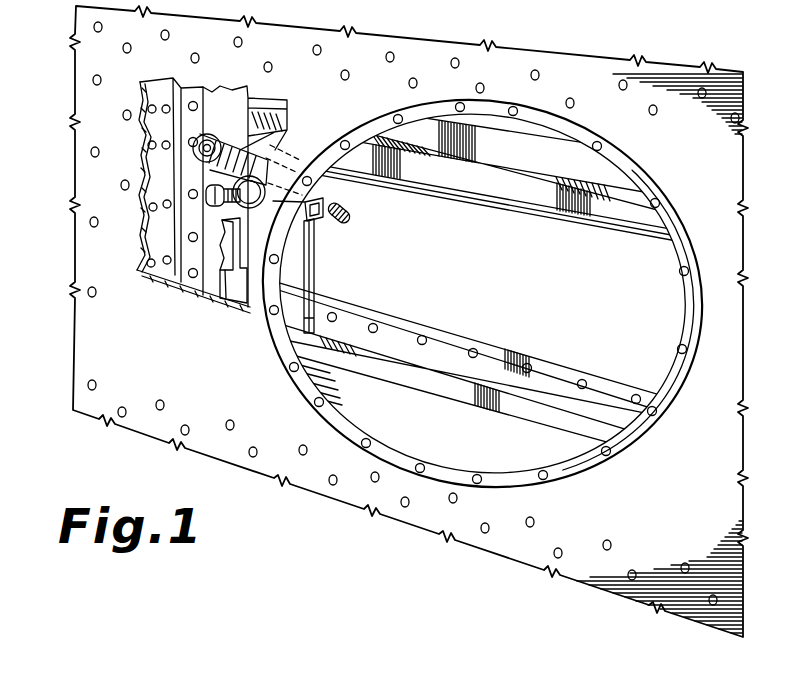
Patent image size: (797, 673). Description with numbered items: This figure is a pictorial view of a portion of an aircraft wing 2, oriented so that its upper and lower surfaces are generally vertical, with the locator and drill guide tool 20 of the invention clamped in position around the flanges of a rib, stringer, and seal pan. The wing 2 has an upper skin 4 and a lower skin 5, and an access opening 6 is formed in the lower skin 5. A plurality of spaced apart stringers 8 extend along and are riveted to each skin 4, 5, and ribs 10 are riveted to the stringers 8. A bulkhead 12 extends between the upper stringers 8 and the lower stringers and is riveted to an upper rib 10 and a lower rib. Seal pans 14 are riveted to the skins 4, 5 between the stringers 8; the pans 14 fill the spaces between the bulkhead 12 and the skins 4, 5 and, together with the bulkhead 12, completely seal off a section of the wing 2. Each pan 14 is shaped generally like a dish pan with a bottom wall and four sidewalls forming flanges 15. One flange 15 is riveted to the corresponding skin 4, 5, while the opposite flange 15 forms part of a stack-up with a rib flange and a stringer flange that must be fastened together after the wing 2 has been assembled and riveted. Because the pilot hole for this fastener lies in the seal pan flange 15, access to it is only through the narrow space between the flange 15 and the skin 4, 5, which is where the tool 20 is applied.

The aircraft wing 2 is at (481, 560).
The upper skin 4 is at (565, 306).
The lower skin 5 is at (679, 516).
The access opening 6 is at (410, 452).
The stringers 8 is at (503, 200).
The ribs 10 is at (247, 196).
The bulkhead 12 is at (138, 188).
The seal pans 14 is at (325, 243).
The flanges 15 is at (333, 278).
The locator and drill guide tool 20 is at (342, 197).